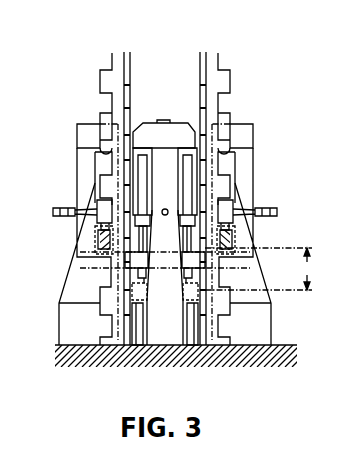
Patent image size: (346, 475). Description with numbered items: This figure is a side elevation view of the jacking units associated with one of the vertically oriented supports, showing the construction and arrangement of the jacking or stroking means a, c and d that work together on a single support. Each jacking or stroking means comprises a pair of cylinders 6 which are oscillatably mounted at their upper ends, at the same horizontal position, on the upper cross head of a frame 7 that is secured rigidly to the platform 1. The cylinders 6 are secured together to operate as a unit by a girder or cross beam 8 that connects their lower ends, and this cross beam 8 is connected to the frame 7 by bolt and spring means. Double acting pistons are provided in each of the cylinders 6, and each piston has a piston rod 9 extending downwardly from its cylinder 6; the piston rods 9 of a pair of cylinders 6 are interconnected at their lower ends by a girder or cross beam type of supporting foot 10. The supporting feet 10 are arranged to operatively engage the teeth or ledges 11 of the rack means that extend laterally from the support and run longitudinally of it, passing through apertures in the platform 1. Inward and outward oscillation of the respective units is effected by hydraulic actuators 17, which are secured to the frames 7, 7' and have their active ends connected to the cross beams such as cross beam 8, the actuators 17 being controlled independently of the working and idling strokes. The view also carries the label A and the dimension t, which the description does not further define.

The platform 1 is at (60, 348).
The cylinders 6 is at (93, 163).
The frame 7 is at (162, 129).
The frame 7' is at (164, 114).
The cross beam 8 is at (95, 203).
The piston rod 9 is at (184, 236).
The supporting foot 10 is at (97, 240).
The teeth or ledges of rack means 11 is at (110, 290).
The hydraulic actuators 17 is at (53, 212).
The apparatus A is at (165, 188).
The jacking or stroking means a is at (206, 177).
The jacking or stroking means c is at (88, 181).
The jacking or stroking means d is at (242, 179).
The stroke dimension t is at (258, 269).